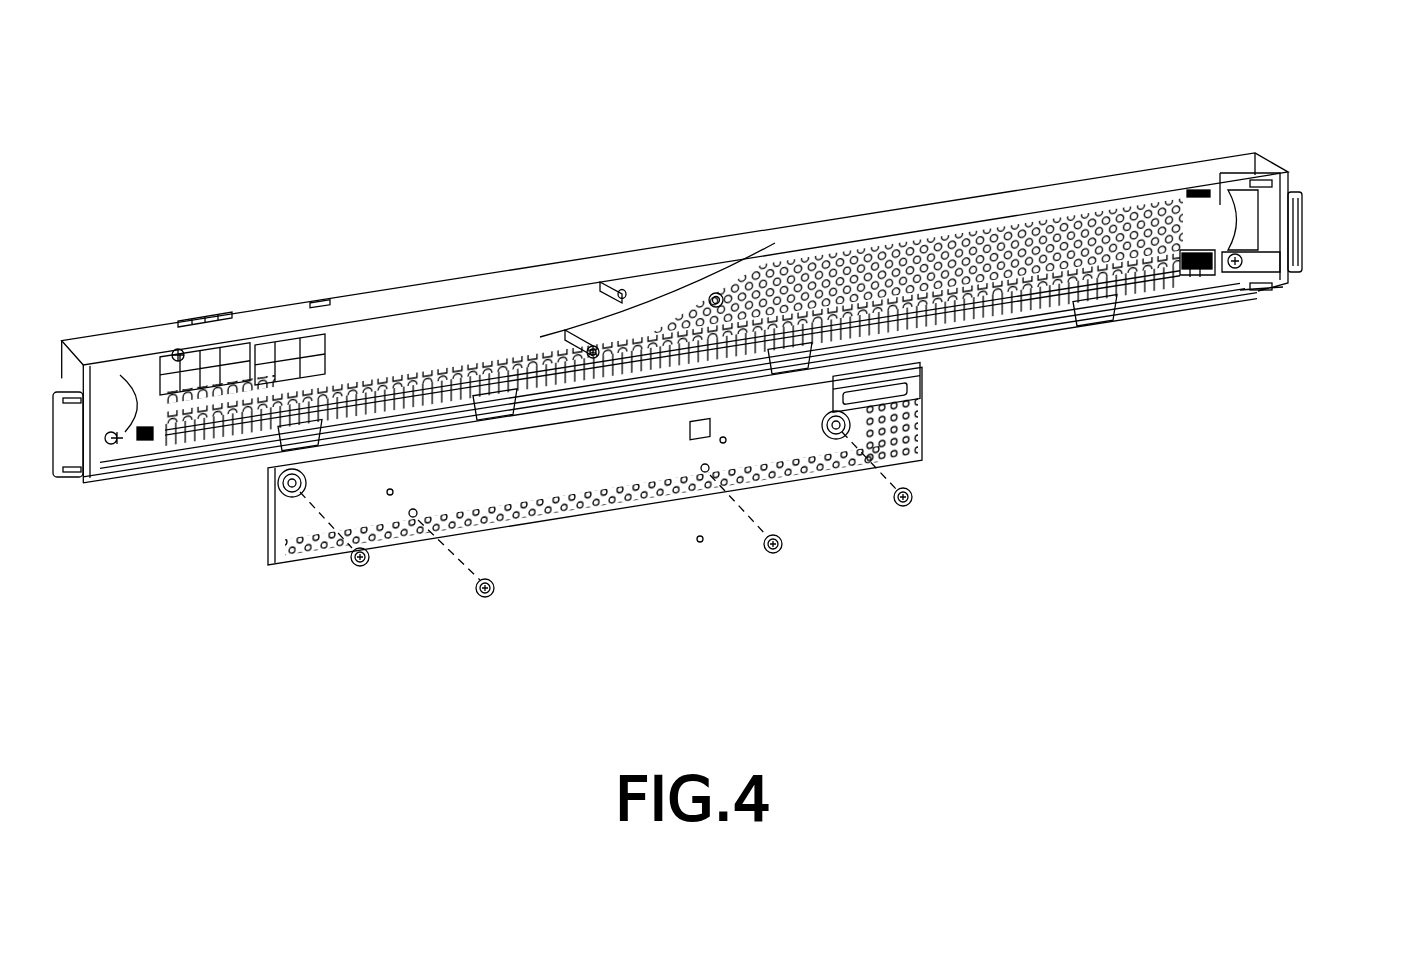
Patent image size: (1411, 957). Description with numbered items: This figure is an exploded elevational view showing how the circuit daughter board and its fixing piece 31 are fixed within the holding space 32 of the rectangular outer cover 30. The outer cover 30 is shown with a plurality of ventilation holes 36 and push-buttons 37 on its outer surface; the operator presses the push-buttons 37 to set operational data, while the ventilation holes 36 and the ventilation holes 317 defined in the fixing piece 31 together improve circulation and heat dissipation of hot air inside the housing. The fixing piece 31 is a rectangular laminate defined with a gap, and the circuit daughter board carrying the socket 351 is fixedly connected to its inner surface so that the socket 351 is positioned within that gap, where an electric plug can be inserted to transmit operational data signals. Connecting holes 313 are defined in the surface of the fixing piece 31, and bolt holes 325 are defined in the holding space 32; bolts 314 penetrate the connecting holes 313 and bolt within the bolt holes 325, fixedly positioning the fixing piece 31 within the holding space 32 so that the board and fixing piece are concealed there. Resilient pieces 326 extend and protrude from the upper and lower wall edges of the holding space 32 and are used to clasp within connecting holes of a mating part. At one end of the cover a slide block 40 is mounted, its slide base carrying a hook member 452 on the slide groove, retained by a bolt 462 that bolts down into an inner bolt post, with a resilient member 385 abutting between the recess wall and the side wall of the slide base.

The outer cover 30 is at (940, 208).
The fixing piece 31 is at (565, 508).
The holding space 32 is at (643, 290).
The ventilation holes 36 is at (1142, 200).
The push-buttons 37 is at (225, 315).
The slide block 40 is at (1250, 222).
The connecting holes 313 is at (290, 482).
The bolts 314 is at (912, 503).
The ventilation holes 317 is at (513, 520).
The bolt holes 325 is at (178, 347).
The resilient pieces 326 is at (1100, 220).
The socket 351 is at (893, 393).
The resilient member 385 is at (1203, 187).
The hook member 452 is at (1258, 186).
The bolt 462 is at (1240, 270).